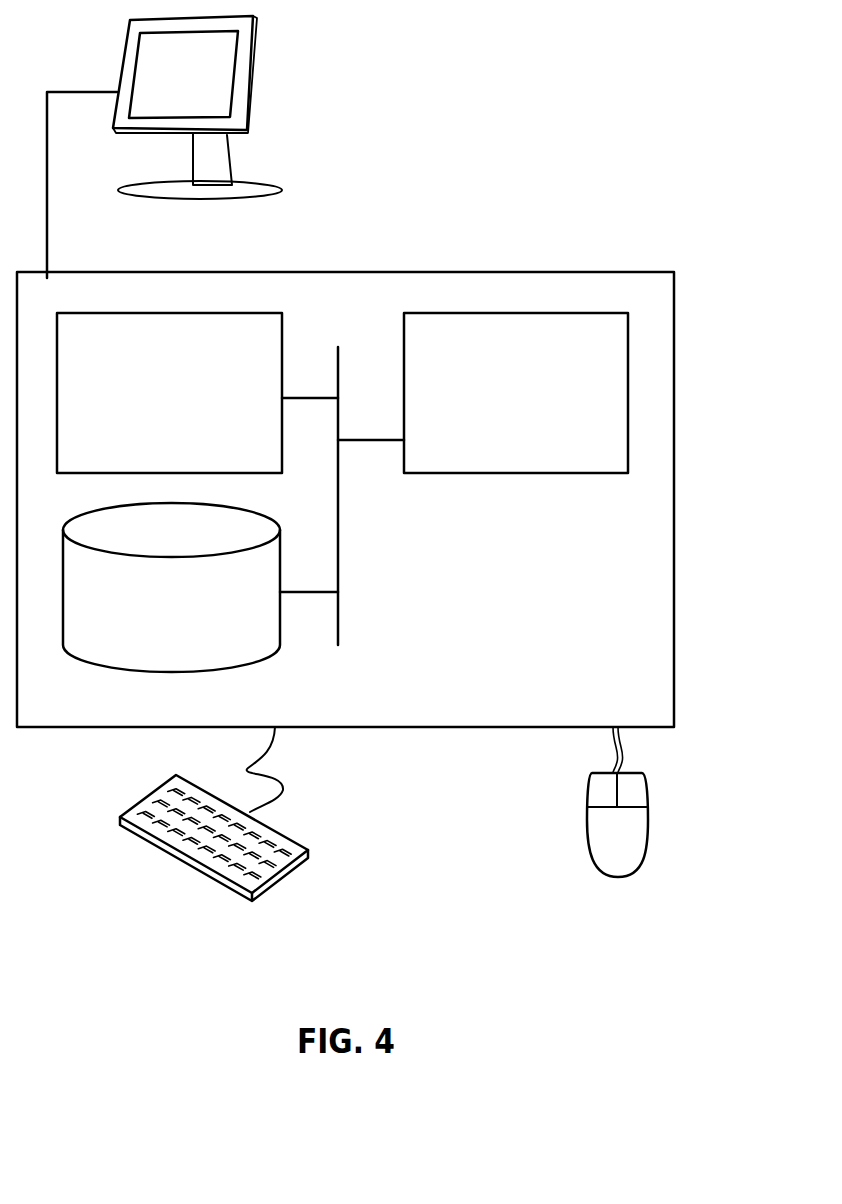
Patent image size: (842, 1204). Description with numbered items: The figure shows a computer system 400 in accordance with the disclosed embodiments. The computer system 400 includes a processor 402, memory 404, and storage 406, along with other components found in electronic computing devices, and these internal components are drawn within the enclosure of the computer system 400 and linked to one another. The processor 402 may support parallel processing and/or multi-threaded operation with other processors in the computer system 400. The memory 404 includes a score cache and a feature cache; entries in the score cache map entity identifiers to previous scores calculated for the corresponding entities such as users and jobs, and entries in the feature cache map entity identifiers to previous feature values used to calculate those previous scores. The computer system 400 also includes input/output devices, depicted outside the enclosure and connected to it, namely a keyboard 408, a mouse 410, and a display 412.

The computer system 400 is at (393, 250).
The processor 402 is at (498, 406).
The memory 404 is at (148, 406).
The storage 406 is at (153, 617).
The keyboard 408 is at (143, 833).
The mouse 410 is at (595, 848).
The display 412 is at (164, 147).